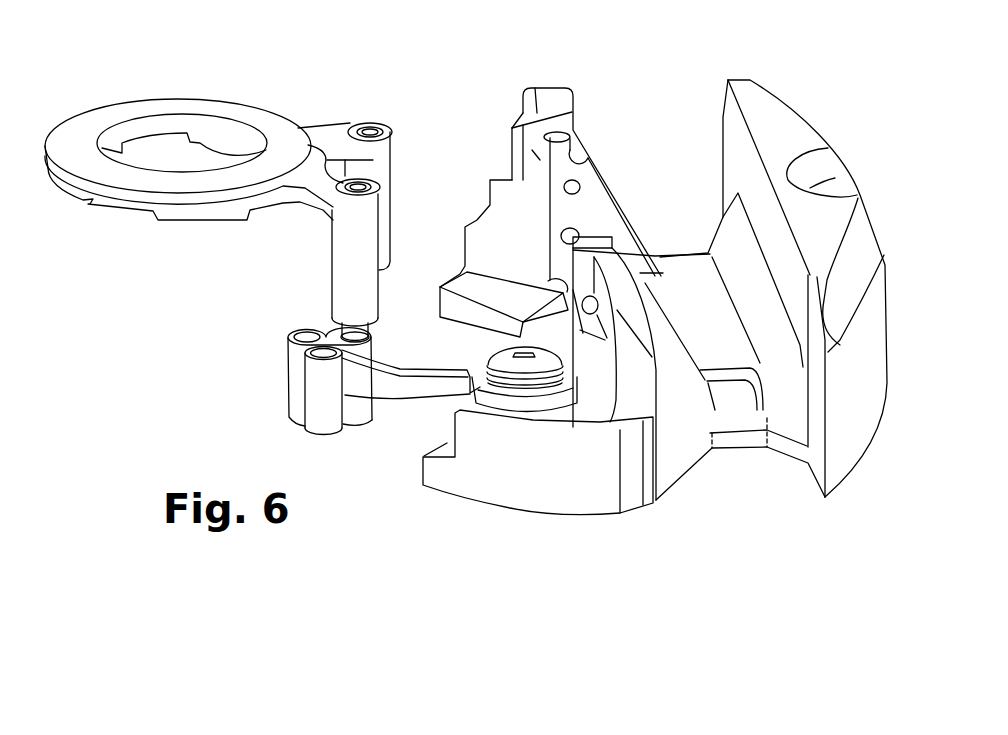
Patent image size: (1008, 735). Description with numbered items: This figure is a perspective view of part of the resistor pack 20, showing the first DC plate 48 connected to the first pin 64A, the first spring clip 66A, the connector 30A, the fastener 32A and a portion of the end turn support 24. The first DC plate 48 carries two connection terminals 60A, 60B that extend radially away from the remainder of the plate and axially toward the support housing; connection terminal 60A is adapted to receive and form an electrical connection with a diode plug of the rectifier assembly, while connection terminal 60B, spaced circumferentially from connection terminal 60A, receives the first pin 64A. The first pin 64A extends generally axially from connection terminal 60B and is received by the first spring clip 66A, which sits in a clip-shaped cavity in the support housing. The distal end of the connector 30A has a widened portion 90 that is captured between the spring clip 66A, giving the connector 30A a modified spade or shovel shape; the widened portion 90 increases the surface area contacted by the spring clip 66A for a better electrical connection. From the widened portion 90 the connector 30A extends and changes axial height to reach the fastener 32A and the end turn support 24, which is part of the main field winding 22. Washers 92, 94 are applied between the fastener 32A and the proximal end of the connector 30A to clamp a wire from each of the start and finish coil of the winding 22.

The resistor pack 20 is at (69, 100).
The first DC plate 48 is at (170, 108).
The connection terminal 60A is at (363, 123).
The connection terminal 60B is at (343, 257).
The first pin 64A is at (347, 333).
The first spring clip 66A is at (298, 418).
The widened portion 90 is at (351, 396).
The connector 30A is at (392, 407).
The fastener 32A is at (493, 360).
The washer 92 is at (497, 383).
The washer 94 is at (550, 383).
The main field winding 22 is at (845, 515).
The end turn support 24 is at (765, 117).